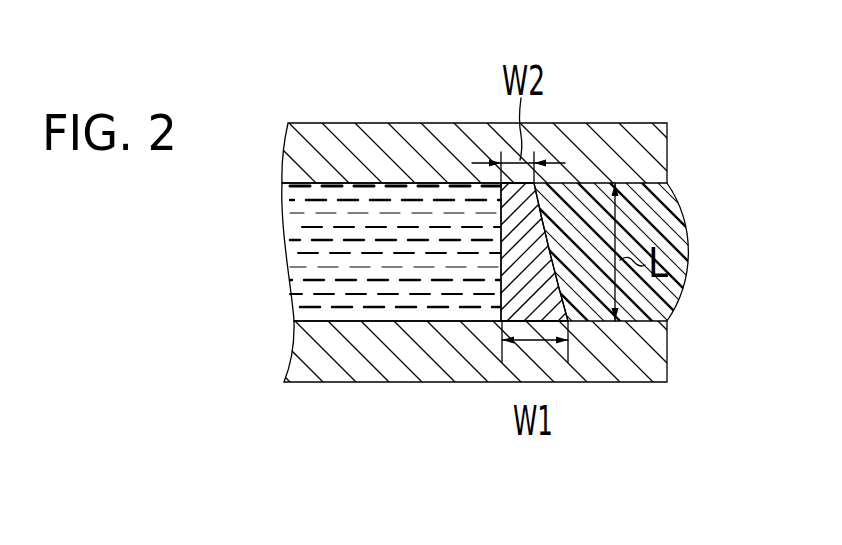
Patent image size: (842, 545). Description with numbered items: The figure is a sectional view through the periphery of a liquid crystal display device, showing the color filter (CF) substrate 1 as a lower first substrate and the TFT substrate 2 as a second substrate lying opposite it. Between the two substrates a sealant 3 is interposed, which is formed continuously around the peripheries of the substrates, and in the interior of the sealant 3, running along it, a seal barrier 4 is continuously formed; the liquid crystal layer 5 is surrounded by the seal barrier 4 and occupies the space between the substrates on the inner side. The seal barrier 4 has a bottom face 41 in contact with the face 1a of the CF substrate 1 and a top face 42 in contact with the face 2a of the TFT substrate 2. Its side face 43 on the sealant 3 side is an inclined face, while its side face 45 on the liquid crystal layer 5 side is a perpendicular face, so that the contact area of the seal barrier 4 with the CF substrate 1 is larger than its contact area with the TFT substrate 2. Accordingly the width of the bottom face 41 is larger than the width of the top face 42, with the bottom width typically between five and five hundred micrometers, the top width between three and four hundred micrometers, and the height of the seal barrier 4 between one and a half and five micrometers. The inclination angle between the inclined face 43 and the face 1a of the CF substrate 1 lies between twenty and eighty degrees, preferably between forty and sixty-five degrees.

The color filter (CF) substrate 1 is at (433, 383).
The face of the CF substrate 1a is at (299, 319).
The TFT substrate 2 is at (372, 123).
The face of the TFT substrate 2a is at (298, 198).
The sealant 3 is at (677, 235).
The seal barrier 4 is at (513, 217).
The bottom face 41 is at (501, 322).
The top face 42 is at (548, 183).
The side face (inclined face) 43 is at (548, 235).
The side face (perpendicular face) 45 is at (500, 238).
The liquid crystal layer 5 is at (327, 312).